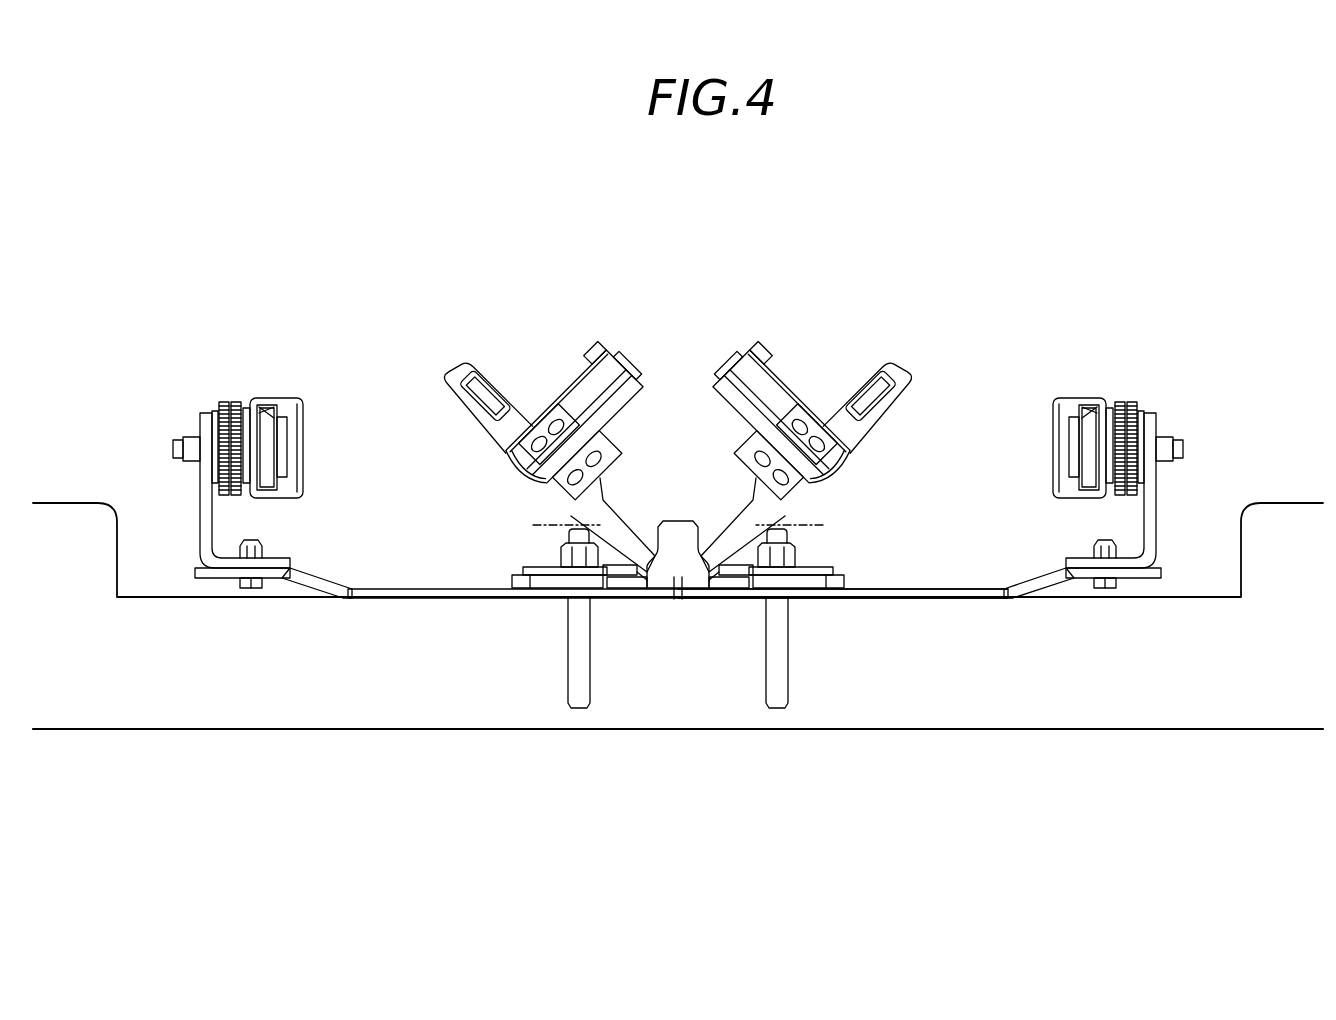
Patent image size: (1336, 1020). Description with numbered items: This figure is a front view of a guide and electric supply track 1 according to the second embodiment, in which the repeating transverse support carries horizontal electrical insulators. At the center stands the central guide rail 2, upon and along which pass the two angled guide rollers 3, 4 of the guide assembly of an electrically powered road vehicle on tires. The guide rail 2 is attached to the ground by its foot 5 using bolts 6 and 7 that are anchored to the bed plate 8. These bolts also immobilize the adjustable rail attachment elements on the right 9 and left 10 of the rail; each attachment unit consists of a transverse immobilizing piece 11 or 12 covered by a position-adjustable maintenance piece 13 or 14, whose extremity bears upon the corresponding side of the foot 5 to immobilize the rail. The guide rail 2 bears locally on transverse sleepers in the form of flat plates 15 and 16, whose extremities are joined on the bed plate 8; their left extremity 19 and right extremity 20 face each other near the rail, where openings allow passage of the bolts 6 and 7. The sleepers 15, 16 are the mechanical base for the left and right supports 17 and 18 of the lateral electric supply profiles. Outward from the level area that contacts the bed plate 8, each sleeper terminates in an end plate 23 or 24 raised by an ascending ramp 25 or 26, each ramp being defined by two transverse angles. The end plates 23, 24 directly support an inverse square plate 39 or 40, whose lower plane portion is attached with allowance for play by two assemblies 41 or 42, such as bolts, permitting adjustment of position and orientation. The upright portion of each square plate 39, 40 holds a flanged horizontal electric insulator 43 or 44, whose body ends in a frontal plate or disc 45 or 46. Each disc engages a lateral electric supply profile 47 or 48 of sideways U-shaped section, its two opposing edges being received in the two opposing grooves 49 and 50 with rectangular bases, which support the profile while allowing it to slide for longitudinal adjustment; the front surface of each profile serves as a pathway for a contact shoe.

The guide and electric supply track 1 is at (1000, 262).
The central guide rail 2 is at (679, 513).
The angled guide roller 3 is at (556, 372).
The angled guide roller 4 is at (795, 372).
The foot 5 is at (677, 599).
The bolt 6 is at (574, 685).
The bolt 7 is at (782, 685).
The bed plate 8 is at (358, 690).
The adjustable rail attachment element 9 is at (512, 552).
The adjustable rail attachment element 10 is at (840, 554).
The transverse immobilizing piece 11 is at (510, 580).
The transverse immobilizing piece 12 is at (850, 581).
The maintenance piece 13 is at (518, 570).
The maintenance piece 14 is at (846, 568).
The sleeper plate 15 is at (480, 604).
The sleeper plate 16 is at (923, 604).
The left support 17 is at (247, 392).
The right support 18 is at (1112, 392).
The left extremity 19 is at (647, 597).
The right extremity 20 is at (706, 597).
The end plate 23 is at (208, 578).
The end plate 24 is at (1143, 580).
The ascending ramp 25 is at (312, 592).
The ascending ramp 26 is at (1037, 592).
The inverse square plate 39 is at (207, 532).
The inverse square plate 40 is at (1149, 532).
The assembly 41 is at (270, 548).
The assembly 42 is at (1086, 548).
The flanged horizontal electric insulator 43 is at (234, 390).
The flanged horizontal electric insulator 44 is at (1122, 390).
The frontal plate or disc 45 is at (262, 436).
The frontal plate or disc 46 is at (1094, 436).
The lateral electric supply profile 47 is at (307, 392).
The lateral electric supply profile 48 is at (1049, 392).
The groove 49 is at (318, 452).
The groove 50 is at (1038, 452).